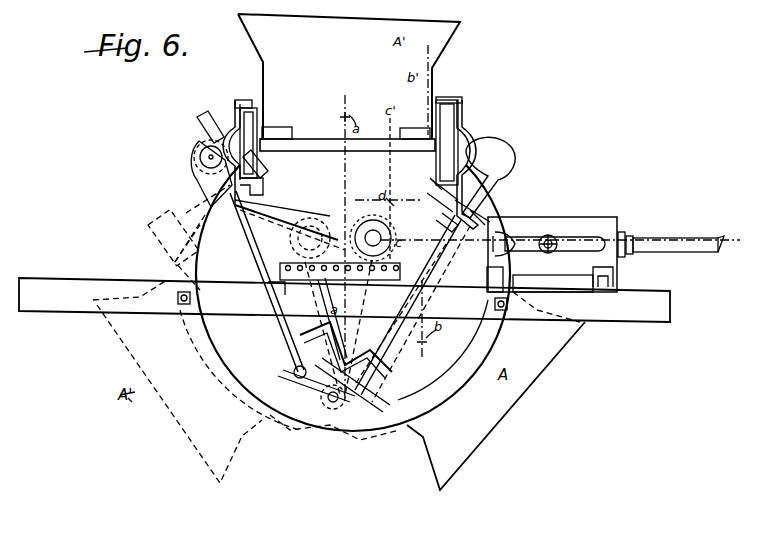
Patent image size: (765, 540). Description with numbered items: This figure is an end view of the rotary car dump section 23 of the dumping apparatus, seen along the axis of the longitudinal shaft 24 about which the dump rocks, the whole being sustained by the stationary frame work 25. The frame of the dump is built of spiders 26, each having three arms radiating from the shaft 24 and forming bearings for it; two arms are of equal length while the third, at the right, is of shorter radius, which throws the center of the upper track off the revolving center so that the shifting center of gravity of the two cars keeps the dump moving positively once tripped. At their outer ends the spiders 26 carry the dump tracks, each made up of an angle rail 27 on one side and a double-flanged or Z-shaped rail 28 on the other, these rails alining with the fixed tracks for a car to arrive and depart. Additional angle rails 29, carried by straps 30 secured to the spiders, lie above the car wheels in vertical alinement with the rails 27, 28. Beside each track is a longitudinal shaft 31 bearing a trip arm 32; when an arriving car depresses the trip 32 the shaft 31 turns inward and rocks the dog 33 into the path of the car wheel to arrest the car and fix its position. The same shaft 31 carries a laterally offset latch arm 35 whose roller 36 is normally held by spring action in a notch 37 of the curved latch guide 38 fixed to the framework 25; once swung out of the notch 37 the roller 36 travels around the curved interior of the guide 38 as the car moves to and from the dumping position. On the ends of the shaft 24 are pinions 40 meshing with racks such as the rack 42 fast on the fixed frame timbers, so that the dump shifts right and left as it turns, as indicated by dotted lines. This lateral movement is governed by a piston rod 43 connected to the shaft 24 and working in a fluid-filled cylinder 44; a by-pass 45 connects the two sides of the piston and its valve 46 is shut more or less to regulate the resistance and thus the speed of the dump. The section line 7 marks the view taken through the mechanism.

The section line 7 is at (533, 221).
The dump section 23 is at (225, 196).
The longitudinal shaft 24 is at (388, 290).
The frame work 25 is at (640, 312).
The spider 26 is at (290, 216).
The angle rail 27 is at (440, 190).
The Z-shaped rail 28 is at (228, 178).
The additional angle rail 29 is at (247, 108).
The strap 30 is at (235, 112).
The longitudinal shaft 31 is at (236, 218).
The trip arm 32 is at (266, 180).
The dog 33 is at (203, 128).
The latch arm 35 is at (230, 186).
The roller 36 is at (199, 156).
The notch 37 is at (195, 166).
The curved latch guide 38 is at (498, 337).
The pinion 40 is at (318, 222).
The rack 42 is at (287, 292).
The piston rod 43 is at (655, 252).
The cylinder 44 is at (570, 218).
The by-pass 45 is at (585, 250).
The valve 46 is at (553, 238).